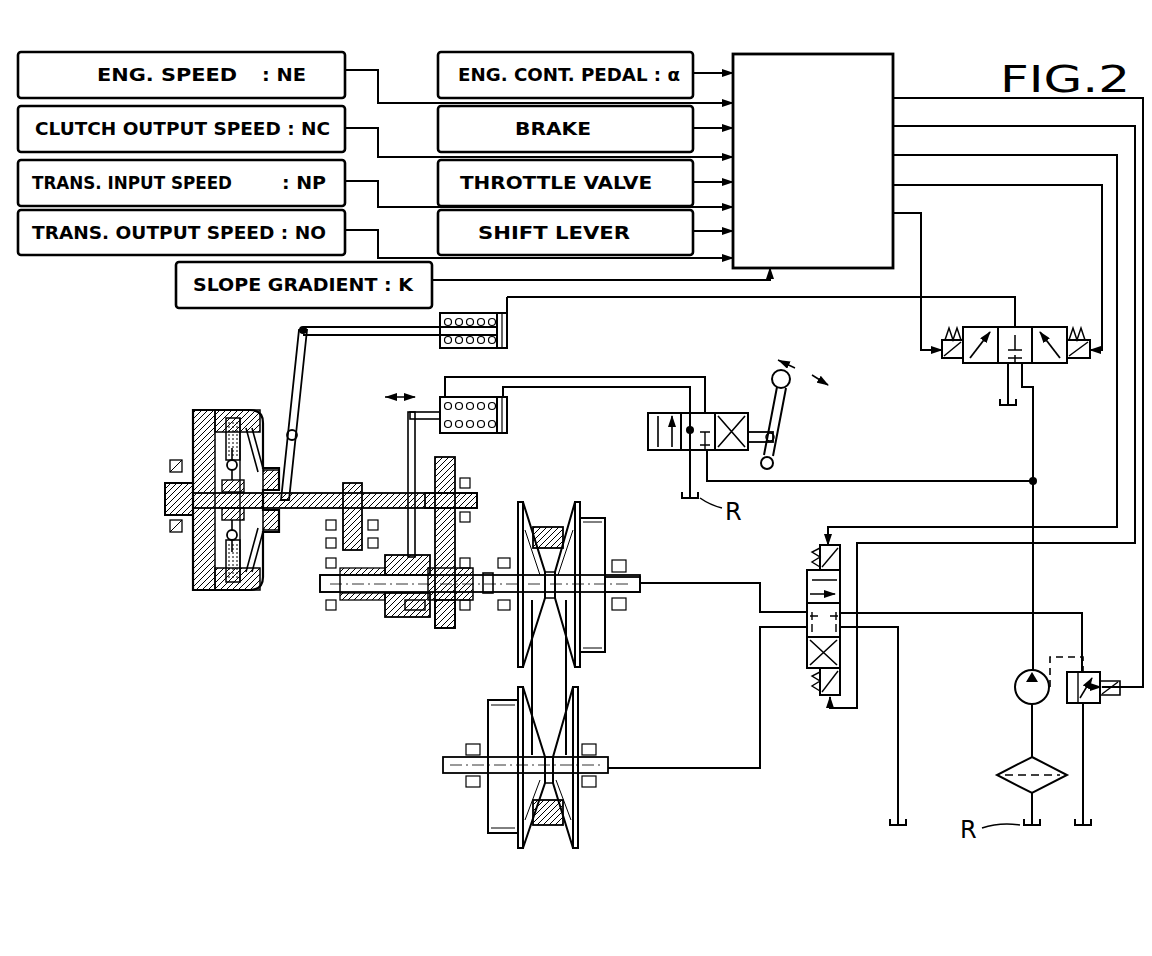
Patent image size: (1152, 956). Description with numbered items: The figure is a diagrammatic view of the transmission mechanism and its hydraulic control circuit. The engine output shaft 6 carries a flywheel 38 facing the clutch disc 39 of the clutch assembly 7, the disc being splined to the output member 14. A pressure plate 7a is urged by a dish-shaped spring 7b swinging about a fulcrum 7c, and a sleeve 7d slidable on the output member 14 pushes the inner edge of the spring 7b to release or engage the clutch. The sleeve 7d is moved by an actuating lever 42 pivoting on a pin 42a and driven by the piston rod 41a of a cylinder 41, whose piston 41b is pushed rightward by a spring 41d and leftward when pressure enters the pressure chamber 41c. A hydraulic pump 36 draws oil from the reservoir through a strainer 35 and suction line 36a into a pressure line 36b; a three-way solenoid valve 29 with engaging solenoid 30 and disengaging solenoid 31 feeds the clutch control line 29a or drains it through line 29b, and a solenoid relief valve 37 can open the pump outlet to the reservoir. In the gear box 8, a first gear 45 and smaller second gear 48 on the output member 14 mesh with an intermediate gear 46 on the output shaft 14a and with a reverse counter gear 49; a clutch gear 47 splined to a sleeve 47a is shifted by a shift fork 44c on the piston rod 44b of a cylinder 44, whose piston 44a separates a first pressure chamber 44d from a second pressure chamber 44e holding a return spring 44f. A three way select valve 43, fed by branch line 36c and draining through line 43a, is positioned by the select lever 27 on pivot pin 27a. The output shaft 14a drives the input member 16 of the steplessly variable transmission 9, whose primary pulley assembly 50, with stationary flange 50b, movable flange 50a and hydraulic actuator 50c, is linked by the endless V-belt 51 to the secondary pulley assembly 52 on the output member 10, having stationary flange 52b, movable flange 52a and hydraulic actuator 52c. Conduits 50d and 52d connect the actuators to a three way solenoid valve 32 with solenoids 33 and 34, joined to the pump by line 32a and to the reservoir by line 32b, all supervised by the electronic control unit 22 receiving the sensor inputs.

The output shaft 6 is at (168, 508).
The clutch assembly 7 is at (231, 501).
The pressure plate 7a is at (240, 418).
The dish-shaped spring 7b is at (220, 455).
The fulcrum 7c is at (262, 448).
The sleeve 7d is at (280, 485).
The gear box 8 is at (416, 569).
The steplessly variable belt-pulley type transmission 9 is at (590, 666).
The output member 10 is at (445, 760).
The output member 14 is at (318, 492).
The output shaft 14a is at (335, 585).
The input member 16 is at (492, 597).
The electronic control unit 22 is at (900, 88).
The select lever 27 is at (797, 412).
The pivot pin 27a is at (775, 464).
The three-way solenoid valve 29 is at (997, 477).
The clutch control line 29a is at (826, 298).
The line 29b is at (990, 364).
The engaging solenoid 30 is at (946, 360).
The disengaging solenoid 31 is at (1090, 338).
The three way solenoid valve 32 is at (770, 627).
The line 32a is at (940, 612).
The line 32b is at (900, 665).
The solenoid 33 is at (818, 548).
The solenoid 34 is at (822, 700).
The strainer 35 is at (1003, 770).
The hydraulic pump 36 is at (1013, 690).
The suction line 36a is at (1030, 728).
The pressure line 36b is at (1025, 635).
The branch line 36c is at (848, 482).
The solenoid relief valve 37 is at (1088, 705).
The flywheel 38 is at (210, 412).
The clutch disc 39 is at (236, 582).
The cylinder 41 is at (444, 325).
The piston rod 41a is at (400, 347).
The piston 41b is at (512, 322).
The pressure chamber 41c is at (512, 342).
The spring 41d is at (445, 350).
The actuating lever 42 is at (300, 413).
The pin 42a is at (300, 432).
The three way select valve 43 is at (735, 411).
The line 43a is at (688, 472).
The cylinder 44 is at (525, 454).
The piston 44a is at (512, 405).
The piston rod 44b is at (410, 416).
The shift fork 44c is at (408, 442).
The first pressure chamber 44d is at (512, 430).
The second pressure chamber 44e is at (450, 395).
The return spring 44f is at (455, 434).
The first gear 45 is at (458, 476).
The intermediate gear 46 is at (445, 630).
The clutch gear 47 is at (402, 618).
The sleeve 47a is at (375, 602).
The second gear 48 is at (350, 484).
The reverse counter gear 49 is at (335, 558).
The primary pulley assembly 50 is at (568, 559).
The movable flange 50a is at (580, 553).
The stationary flange 50b is at (520, 545).
The hydraulic actuator 50c is at (600, 630).
The conduit 50d is at (720, 582).
The endless V-belt 51 is at (548, 528).
The secondary pulley assembly 52 is at (527, 767).
The movable flange 52a is at (520, 805).
The stationary flange 52b is at (578, 800).
The hydraulic actuator 52c is at (490, 790).
The conduit 52d is at (732, 770).